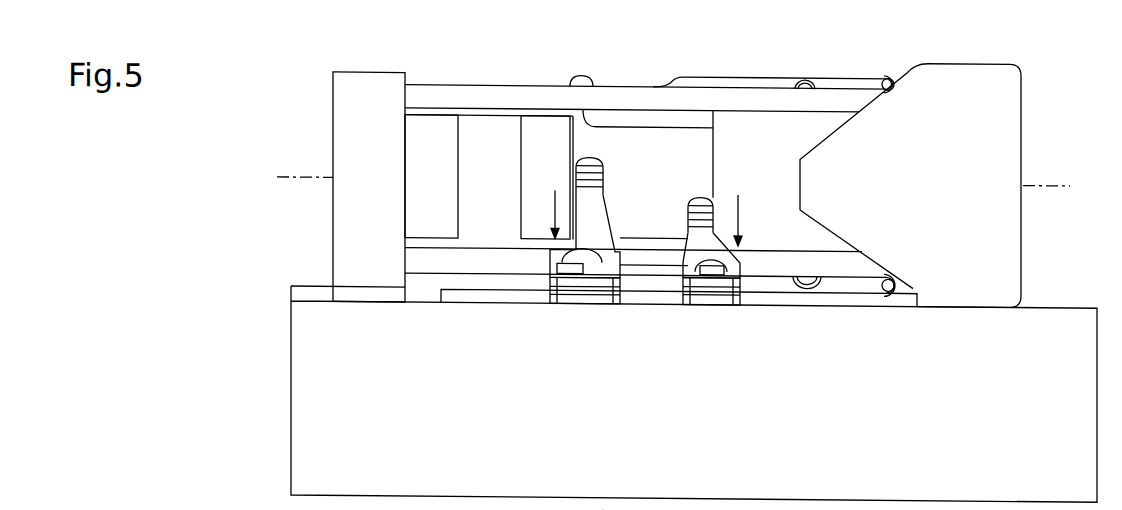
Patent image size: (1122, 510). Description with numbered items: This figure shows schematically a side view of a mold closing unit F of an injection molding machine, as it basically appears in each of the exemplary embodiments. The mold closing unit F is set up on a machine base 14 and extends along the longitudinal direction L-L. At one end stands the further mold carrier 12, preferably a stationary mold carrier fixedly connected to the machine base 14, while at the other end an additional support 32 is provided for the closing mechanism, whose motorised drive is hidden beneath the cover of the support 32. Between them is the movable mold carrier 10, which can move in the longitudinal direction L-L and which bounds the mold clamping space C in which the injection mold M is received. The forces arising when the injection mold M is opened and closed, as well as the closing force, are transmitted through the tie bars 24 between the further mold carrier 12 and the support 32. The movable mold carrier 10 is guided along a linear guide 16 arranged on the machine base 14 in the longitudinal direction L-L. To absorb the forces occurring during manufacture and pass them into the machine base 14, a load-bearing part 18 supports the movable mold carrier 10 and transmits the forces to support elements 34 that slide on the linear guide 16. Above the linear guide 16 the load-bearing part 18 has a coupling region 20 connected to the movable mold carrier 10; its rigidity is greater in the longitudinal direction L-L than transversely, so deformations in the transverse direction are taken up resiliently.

The movable mold carrier 10 is at (628, 132).
The further mold carrier 12 is at (368, 102).
The machine base 14 is at (376, 426).
The linear guide 16 is at (782, 296).
The load-bearing part 18 is at (590, 210).
The coupling region 20 is at (604, 194).
The tie bars 24 is at (772, 97).
The support 32 is at (938, 190).
The support element 34 is at (562, 296).
The injection mold M is at (432, 130).
The mold closing unit F is at (648, 215).
The mold clamping space C is at (488, 252).
The longitudinal direction L is at (674, 182).